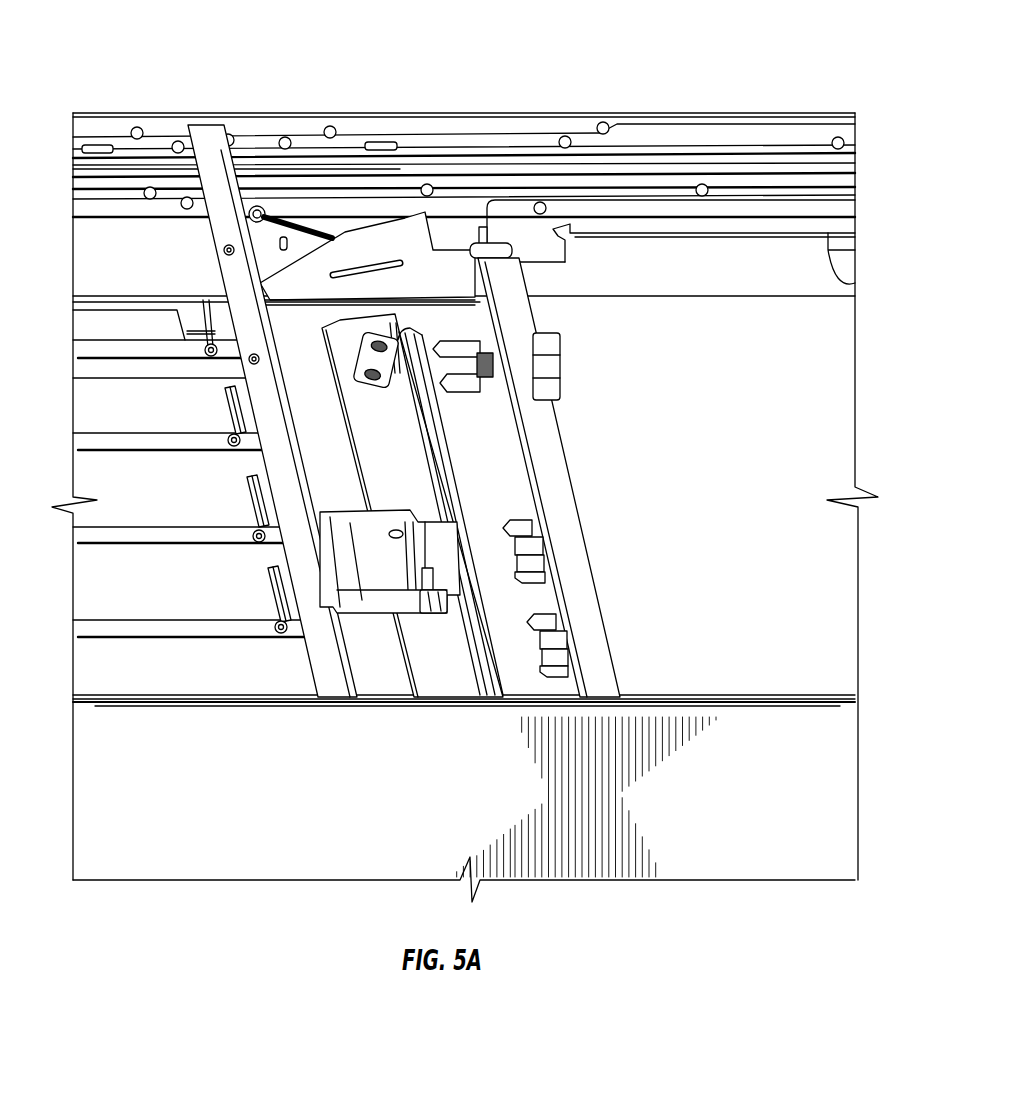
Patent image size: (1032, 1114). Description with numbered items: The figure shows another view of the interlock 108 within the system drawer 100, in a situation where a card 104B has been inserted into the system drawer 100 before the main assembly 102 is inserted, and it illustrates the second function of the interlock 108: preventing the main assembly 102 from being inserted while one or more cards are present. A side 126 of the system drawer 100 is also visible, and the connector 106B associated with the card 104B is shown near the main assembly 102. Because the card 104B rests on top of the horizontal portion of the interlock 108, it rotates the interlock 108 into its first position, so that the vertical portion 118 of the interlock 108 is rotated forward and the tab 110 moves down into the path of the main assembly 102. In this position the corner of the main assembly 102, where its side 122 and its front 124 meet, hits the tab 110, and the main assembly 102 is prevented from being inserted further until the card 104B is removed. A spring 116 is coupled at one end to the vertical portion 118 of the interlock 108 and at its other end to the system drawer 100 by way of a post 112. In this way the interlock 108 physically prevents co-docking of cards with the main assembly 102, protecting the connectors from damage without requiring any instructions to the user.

The system drawer 100 is at (778, 50).
The main assembly 102 is at (812, 575).
The card 104B is at (370, 561).
The connector 106B is at (442, 560).
The interlock 108 is at (383, 683).
The tab 110 is at (456, 252).
The post 112 is at (256, 205).
The spring 116 is at (296, 226).
The vertical portion 118 is at (339, 248).
The side 122 is at (803, 270).
The front 124 is at (549, 462).
The side 126 is at (818, 807).